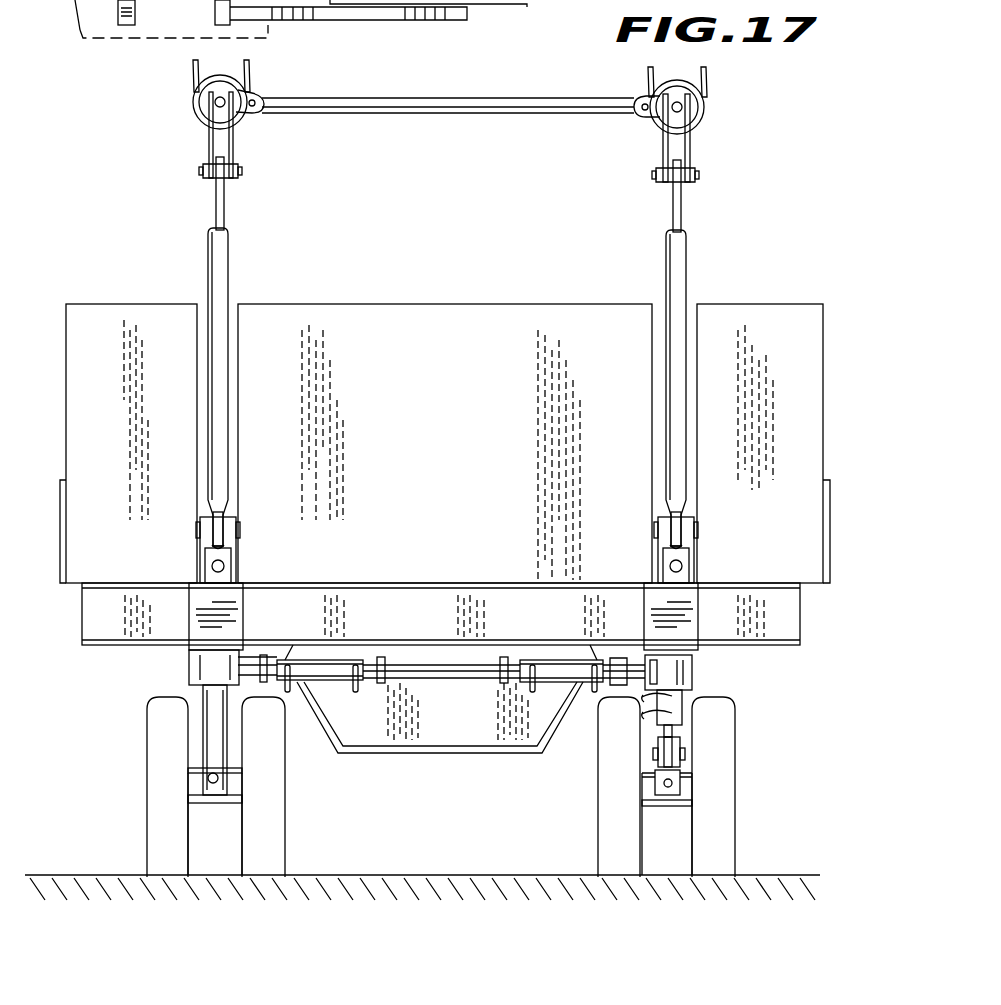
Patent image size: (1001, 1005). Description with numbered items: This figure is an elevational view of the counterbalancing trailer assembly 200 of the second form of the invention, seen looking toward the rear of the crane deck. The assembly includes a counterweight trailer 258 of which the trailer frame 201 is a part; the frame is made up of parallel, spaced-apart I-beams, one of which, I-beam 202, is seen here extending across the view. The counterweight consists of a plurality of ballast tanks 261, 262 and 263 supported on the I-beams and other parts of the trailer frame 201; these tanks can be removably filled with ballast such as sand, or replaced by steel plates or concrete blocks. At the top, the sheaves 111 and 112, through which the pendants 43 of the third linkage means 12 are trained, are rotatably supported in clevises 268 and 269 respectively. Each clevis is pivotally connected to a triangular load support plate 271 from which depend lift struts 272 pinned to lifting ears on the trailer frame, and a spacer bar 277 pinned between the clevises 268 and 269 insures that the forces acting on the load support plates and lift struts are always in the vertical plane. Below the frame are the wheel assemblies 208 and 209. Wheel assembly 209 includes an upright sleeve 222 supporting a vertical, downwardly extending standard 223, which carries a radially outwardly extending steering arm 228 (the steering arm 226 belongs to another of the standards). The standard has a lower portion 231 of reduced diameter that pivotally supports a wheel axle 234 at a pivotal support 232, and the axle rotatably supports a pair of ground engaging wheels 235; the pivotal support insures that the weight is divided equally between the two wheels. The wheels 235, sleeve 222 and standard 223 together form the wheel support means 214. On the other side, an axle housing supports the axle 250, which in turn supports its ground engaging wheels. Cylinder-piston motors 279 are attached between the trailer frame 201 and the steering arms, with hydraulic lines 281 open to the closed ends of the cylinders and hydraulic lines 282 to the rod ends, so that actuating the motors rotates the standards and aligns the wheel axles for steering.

The steering arm 226 is at (53, 0).
The pendant 43 is at (195, 72).
The sheave 112 is at (193, 118).
The third linkage means 12 is at (193, 141).
The clevis 269 is at (245, 107).
The spacer bar 277 is at (450, 114).
The sheave 111 is at (705, 112).
The clevis 268 is at (700, 124).
The triangular load support plate 271 is at (226, 207).
The lift strut 272 is at (228, 262).
The ballast tank 261 is at (93, 303).
The ballast tank 262 is at (378, 305).
The ballast tank 263 is at (765, 318).
The counterweight trailer 258 is at (841, 337).
The counterbalancing trailer assembly 200 is at (53, 375).
The I-beam 202 is at (790, 615).
The wheel assembly 209 is at (247, 576).
The upright sleeve 222 is at (210, 607).
The downwardly extending standard 223 is at (195, 665).
The steering arm 228 is at (252, 657).
The cylinder-piston motor 279 is at (333, 665).
The hydraulic line 281 is at (356, 692).
The hydraulic line 282 is at (287, 692).
The lower portion 231 is at (205, 692).
The pivotal support 232 is at (208, 778).
The wheel axle 234 is at (213, 803).
The ground engaging wheel 235 is at (160, 822).
The wheel support means 214 is at (125, 716).
The trailer frame 201 is at (742, 695).
The wheel assembly 208 is at (736, 663).
The axle 250 is at (668, 806).